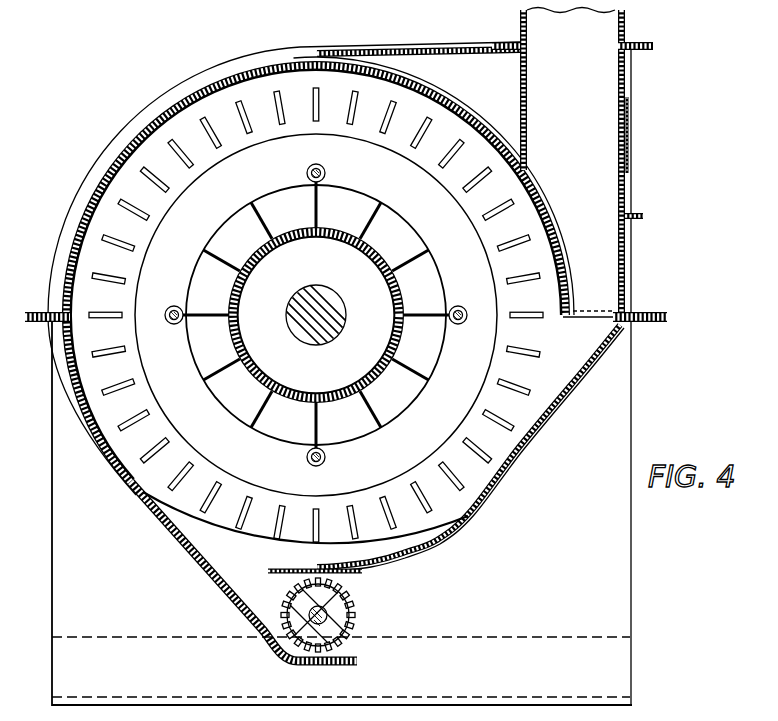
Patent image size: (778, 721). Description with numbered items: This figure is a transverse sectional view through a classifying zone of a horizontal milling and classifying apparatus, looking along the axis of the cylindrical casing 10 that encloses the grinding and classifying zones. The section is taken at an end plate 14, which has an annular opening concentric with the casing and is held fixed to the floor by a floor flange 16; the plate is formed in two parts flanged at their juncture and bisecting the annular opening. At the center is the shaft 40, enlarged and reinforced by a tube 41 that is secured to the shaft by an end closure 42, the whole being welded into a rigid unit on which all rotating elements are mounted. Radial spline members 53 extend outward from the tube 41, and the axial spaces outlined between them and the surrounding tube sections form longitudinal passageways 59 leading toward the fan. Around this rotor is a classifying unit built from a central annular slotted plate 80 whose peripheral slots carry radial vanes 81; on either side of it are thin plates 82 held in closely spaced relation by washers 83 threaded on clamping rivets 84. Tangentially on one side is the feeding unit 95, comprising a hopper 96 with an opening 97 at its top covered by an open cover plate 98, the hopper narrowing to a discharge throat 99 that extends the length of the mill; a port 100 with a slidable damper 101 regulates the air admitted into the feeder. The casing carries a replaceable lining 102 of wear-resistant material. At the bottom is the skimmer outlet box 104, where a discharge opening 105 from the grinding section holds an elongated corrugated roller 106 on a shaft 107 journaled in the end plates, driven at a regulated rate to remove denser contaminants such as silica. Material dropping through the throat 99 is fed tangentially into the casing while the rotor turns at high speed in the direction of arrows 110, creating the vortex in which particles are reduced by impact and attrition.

The cylindrical casing 10 is at (253, 56).
The end plate 14 is at (212, 73).
The floor flange 16 is at (98, 640).
The shaft 40 is at (335, 302).
The tube 41 is at (244, 297).
The end closure 42 is at (326, 271).
The radial spline members 53 is at (311, 214).
The longitudinal passageways 59 is at (388, 232).
The central annular slotted plate 80 is at (316, 306).
The radial vanes 81 is at (285, 116).
The thin plates 82 is at (233, 198).
The washers 83 is at (326, 173).
The clamping rivets 84 is at (322, 167).
The tangential feeding unit 95 is at (630, 78).
The hopper 96 is at (578, 163).
The opening 97 is at (624, 45).
The open cover plate 98 is at (607, 19).
The discharge throat 99 is at (606, 299).
The port 100 is at (622, 138).
The slidable damper cover means 101 is at (644, 218).
The replaceable lining 102 is at (140, 498).
The skimmer outlet box 104 is at (246, 627).
The discharge opening 105 is at (262, 591).
The corrugated roller 106 is at (348, 598).
The shaft 107 is at (325, 617).
The arrows 110 is at (216, 456).